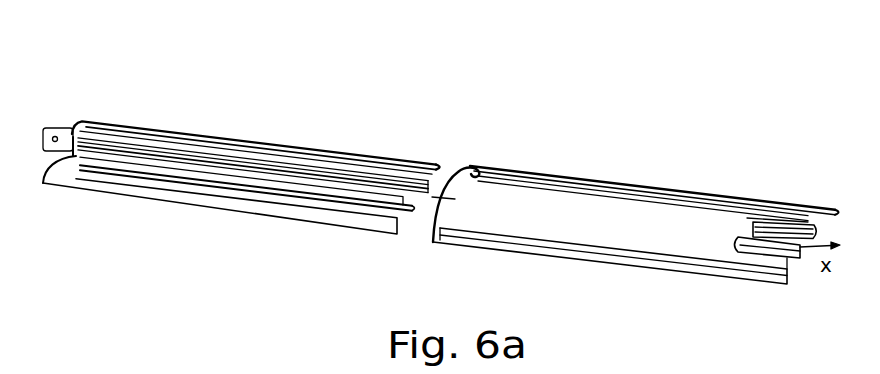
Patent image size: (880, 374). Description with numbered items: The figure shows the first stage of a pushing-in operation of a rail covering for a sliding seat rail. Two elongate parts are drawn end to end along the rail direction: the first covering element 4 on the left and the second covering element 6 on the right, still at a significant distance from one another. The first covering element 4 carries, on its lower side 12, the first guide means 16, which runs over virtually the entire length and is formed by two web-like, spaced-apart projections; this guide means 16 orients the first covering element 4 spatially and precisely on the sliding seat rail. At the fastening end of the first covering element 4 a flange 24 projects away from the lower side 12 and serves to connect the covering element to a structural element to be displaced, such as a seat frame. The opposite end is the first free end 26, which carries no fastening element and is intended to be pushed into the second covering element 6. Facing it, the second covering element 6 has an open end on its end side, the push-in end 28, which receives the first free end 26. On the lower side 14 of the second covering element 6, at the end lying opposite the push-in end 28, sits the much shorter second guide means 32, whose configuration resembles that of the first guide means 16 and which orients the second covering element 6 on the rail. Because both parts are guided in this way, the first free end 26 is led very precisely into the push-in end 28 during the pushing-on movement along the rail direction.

The first covering element 4 is at (163, 147).
The second covering element 6 is at (571, 175).
The lower side of the first covering element 12 is at (199, 215).
The lower side of the second covering element 14 is at (609, 240).
The first guide means 16 is at (303, 216).
The flange 24 is at (57, 126).
The first free end 26 is at (427, 155).
The push-in end 28 is at (454, 160).
The second guide means 32 is at (793, 210).